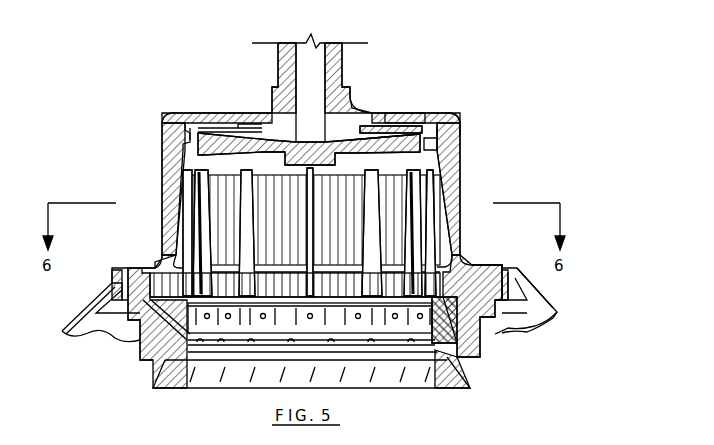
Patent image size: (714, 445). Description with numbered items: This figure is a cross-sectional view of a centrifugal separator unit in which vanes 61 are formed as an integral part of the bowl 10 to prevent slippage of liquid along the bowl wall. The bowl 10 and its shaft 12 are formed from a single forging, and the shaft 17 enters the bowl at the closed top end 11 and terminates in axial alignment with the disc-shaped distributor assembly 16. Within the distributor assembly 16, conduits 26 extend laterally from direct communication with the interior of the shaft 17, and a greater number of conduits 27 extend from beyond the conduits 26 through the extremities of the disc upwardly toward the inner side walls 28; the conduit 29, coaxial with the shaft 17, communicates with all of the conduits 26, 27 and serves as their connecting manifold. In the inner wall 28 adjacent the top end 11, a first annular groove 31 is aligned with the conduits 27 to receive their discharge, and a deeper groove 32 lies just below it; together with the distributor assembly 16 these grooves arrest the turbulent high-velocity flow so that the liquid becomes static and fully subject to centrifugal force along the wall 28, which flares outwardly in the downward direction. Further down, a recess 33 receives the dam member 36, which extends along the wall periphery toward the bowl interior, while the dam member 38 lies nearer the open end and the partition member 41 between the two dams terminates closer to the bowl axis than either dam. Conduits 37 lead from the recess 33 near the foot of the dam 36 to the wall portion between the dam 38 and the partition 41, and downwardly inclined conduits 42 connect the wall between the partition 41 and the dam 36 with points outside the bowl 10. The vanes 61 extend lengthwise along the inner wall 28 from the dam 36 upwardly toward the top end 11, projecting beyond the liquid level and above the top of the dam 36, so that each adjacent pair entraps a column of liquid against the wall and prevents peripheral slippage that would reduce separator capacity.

The bowl 10 is at (456, 110).
The top end 11 is at (403, 115).
The shaft 12 is at (345, 68).
The distributor assembly 16 is at (268, 124).
The shaft 17 is at (287, 75).
The conduits 26 is at (337, 135).
The conduits 27 is at (425, 130).
The inner side walls 28 is at (392, 212).
The conduit 29 is at (372, 130).
The first recess or annular groove 31 is at (458, 118).
The recess or annular groove 32 is at (432, 150).
The recess or annular groove 33 is at (483, 268).
The dam member 36 is at (485, 315).
The conduits 37 is at (490, 315).
The dam member 38 is at (470, 388).
The partition member 41 is at (432, 340).
The conduits 42 is at (458, 333).
The vanes 61 is at (183, 223).